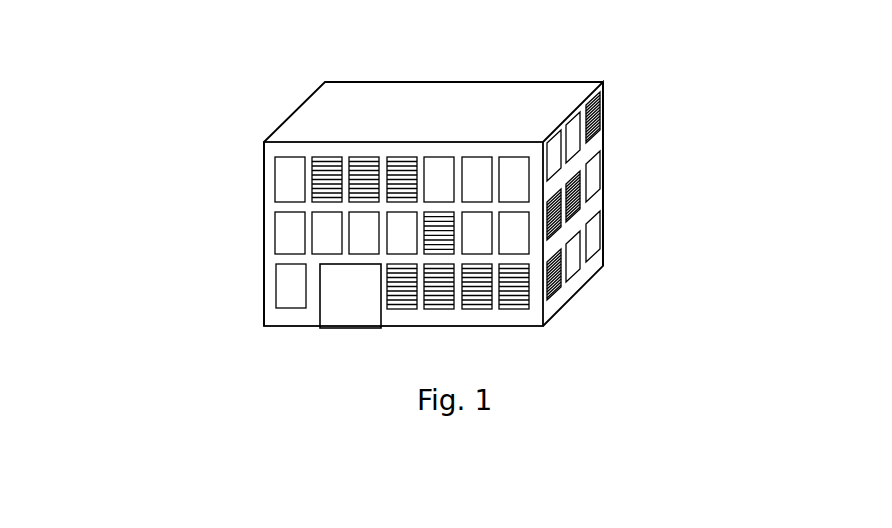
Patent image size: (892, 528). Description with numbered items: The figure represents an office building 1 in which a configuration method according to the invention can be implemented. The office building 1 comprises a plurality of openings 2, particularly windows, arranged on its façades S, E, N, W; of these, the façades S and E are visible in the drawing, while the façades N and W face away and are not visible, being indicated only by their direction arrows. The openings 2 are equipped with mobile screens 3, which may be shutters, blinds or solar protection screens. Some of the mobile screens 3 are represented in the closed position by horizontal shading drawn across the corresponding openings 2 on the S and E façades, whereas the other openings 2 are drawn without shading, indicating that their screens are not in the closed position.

The office building 1 is at (188, 108).
The openings 2 is at (477, 173).
The mobile screens 3 is at (322, 172).
The south façade S is at (283, 320).
The east façade E is at (573, 295).
The west façade W is at (257, 198).
The north façade N is at (610, 138).